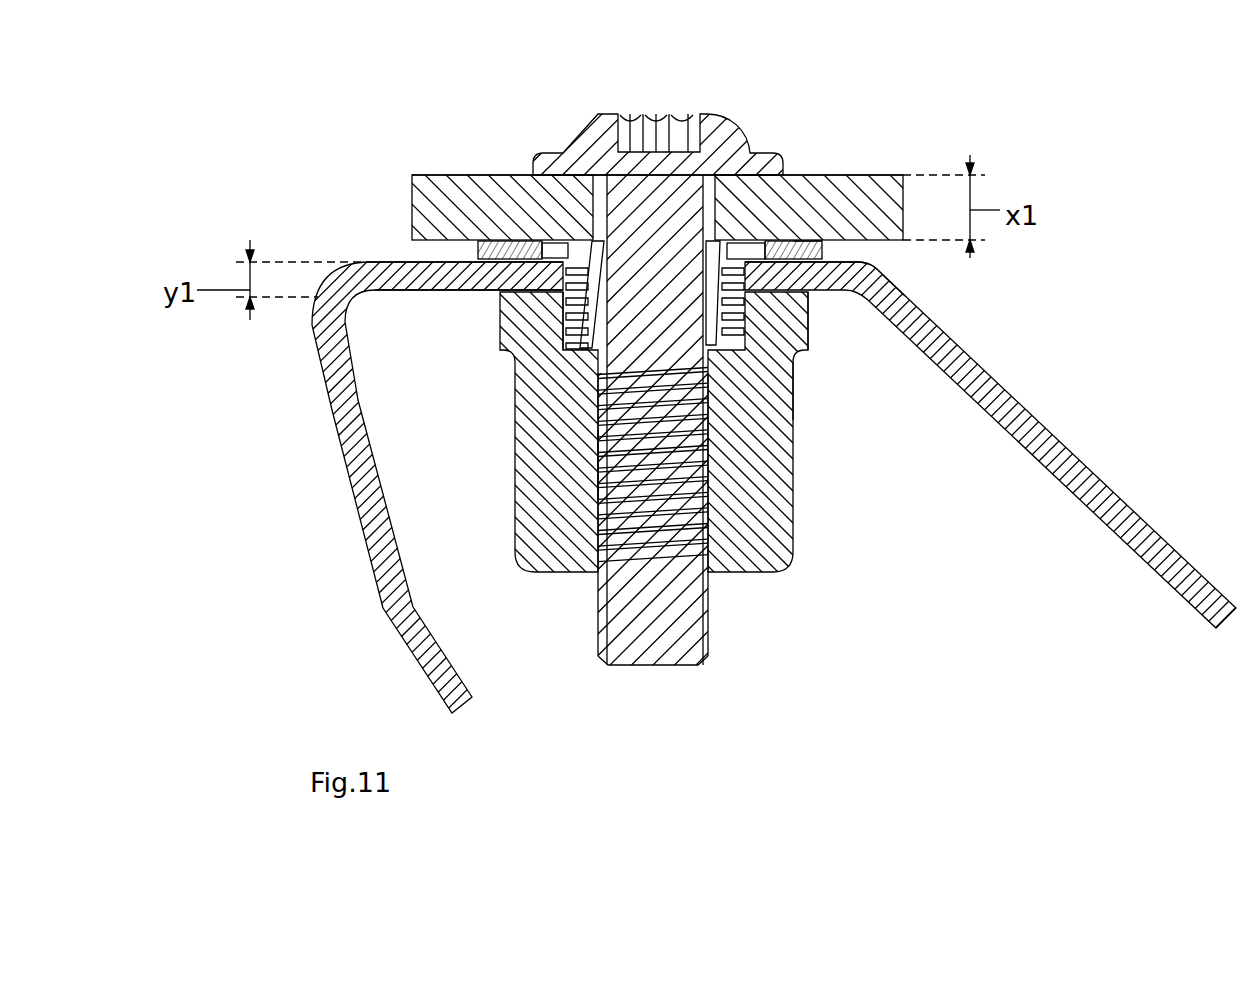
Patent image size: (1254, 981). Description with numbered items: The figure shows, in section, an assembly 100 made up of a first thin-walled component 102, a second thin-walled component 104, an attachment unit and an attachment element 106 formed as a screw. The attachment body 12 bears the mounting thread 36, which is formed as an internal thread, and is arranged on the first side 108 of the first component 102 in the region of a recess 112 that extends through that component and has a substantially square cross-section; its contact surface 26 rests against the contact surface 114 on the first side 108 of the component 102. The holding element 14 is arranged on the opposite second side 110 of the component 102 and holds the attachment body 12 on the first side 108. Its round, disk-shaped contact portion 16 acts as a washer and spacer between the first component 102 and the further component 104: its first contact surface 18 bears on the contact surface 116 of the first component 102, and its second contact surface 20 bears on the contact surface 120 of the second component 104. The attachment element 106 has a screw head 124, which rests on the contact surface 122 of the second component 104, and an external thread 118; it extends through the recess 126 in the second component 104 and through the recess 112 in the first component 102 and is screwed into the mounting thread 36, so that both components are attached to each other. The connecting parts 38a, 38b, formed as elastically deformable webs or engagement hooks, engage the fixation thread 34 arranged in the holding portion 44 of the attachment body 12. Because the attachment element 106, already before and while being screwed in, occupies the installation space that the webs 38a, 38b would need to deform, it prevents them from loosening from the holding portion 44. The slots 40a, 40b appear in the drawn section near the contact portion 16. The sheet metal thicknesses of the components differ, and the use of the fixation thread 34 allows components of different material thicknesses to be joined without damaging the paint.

The assembly 100 is at (905, 133).
The first thin-walled component 102 is at (1083, 468).
The second thin-walled component 104 is at (430, 186).
The attachment element 106 is at (627, 490).
The first side of component 108 is at (871, 381).
The second side of component 110 is at (627, 490).
The recess 112 is at (553, 282).
The contact surface of component 114 is at (430, 291).
The contact surface of component 116 is at (858, 263).
The external thread 118 is at (598, 613).
The contact surface of further component 120 is at (895, 242).
The contact surface of second component 122 is at (450, 176).
The screw head 124 is at (707, 135).
The recess in second component 126 is at (686, 186).
The attachment body 12 is at (795, 560).
The holding element 14 is at (793, 248).
The contact portion 16 is at (510, 248).
The first contact surface 18 is at (803, 248).
The second contact surface 20 is at (793, 250).
The contact surface 26 is at (548, 288).
The fixation thread 34 is at (735, 312).
The mounting thread 36 is at (597, 465).
The connecting part 38a is at (598, 348).
The connecting part 38b is at (733, 342).
The slot 40a is at (555, 250).
The slot 40b is at (743, 250).
The holding portion 44 is at (552, 317).